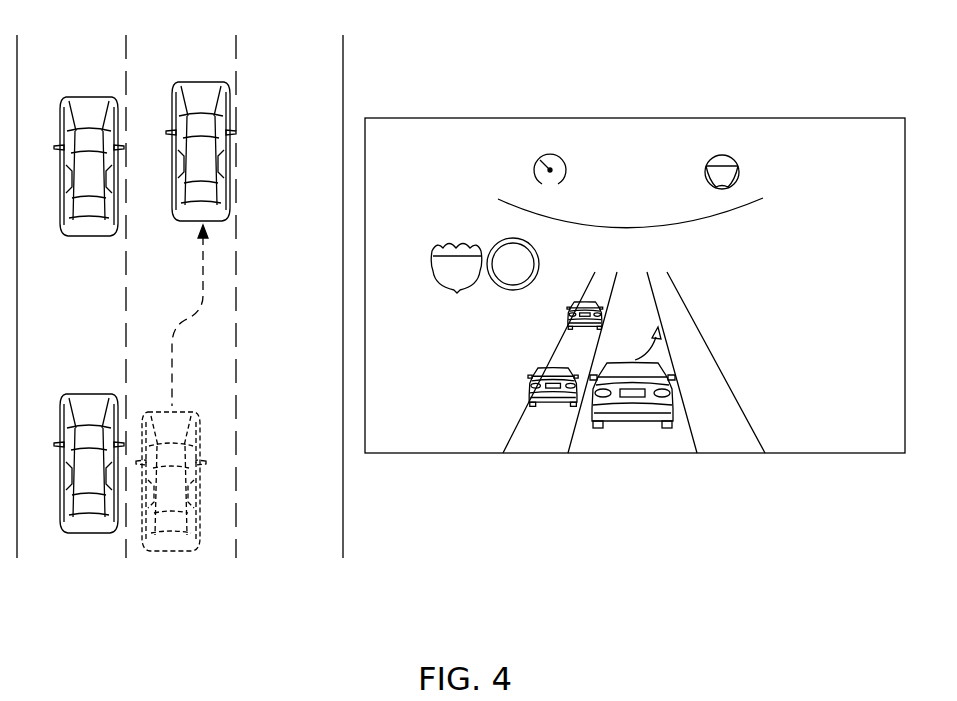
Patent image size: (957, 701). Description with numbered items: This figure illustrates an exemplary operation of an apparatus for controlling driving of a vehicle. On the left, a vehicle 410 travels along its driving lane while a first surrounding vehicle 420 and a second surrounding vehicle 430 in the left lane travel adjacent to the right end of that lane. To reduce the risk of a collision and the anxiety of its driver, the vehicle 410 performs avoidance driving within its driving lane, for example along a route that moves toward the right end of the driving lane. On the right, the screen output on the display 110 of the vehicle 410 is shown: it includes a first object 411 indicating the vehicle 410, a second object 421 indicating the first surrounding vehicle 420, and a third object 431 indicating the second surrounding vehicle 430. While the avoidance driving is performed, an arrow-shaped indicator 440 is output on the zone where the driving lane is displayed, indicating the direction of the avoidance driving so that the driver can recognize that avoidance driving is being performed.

The display 110 is at (635, 282).
The vehicle 410 is at (226, 168).
The first surrounding vehicle 420 is at (72, 396).
The second surrounding vehicle 430 is at (72, 98).
The first object 411 is at (637, 417).
The second object 421 is at (553, 398).
The third object 431 is at (570, 310).
The arrow-shaped indicator 440 is at (672, 357).